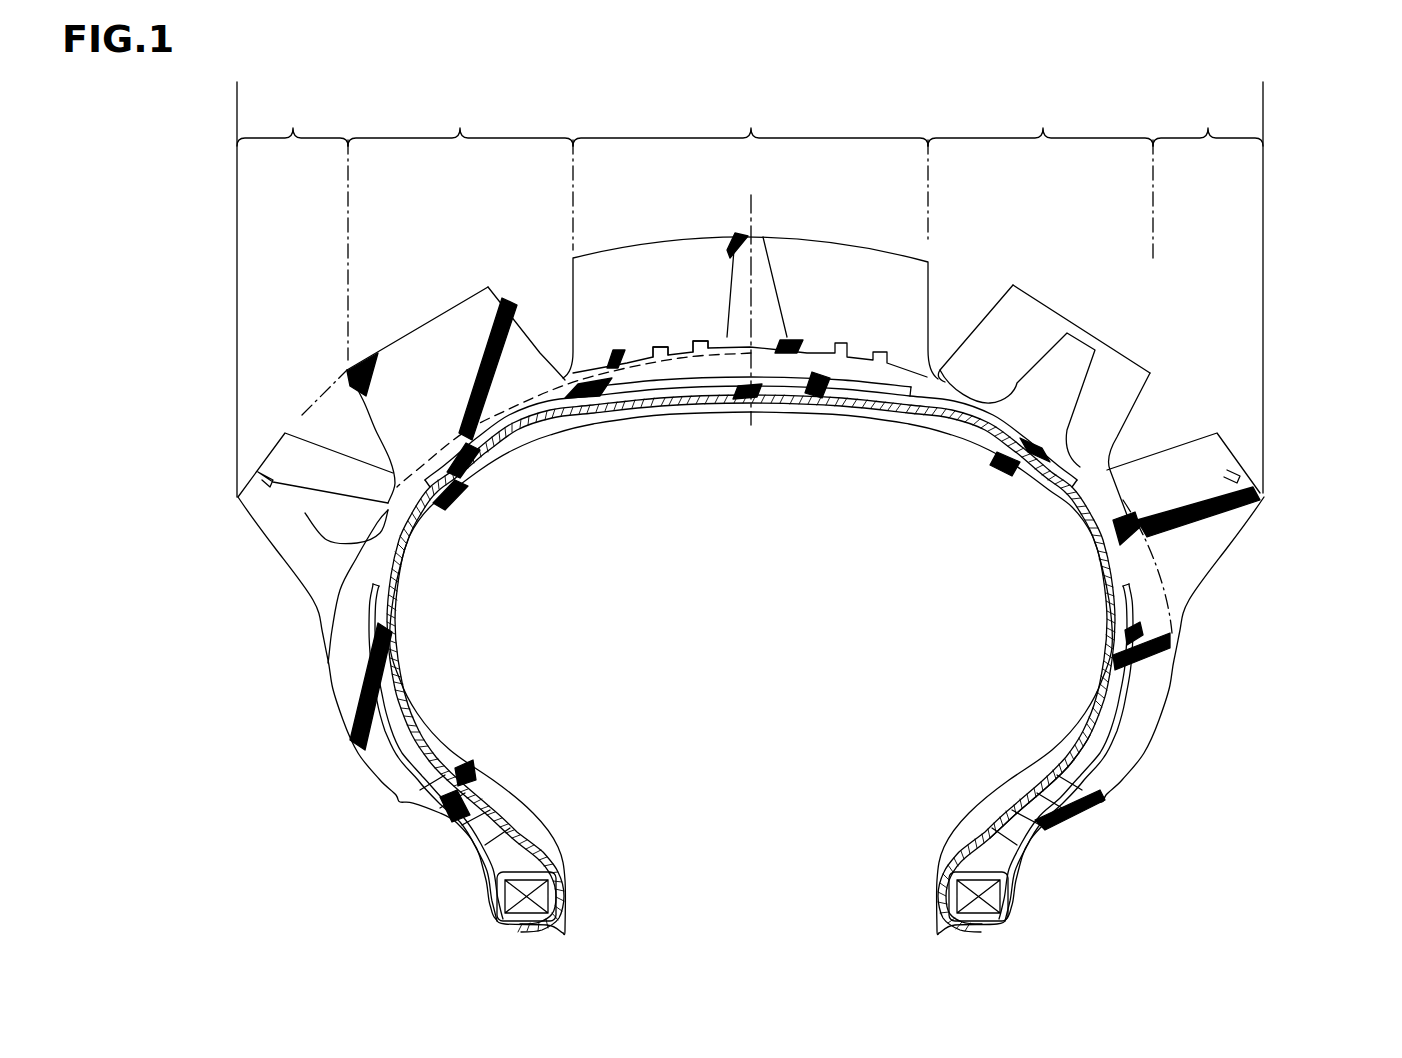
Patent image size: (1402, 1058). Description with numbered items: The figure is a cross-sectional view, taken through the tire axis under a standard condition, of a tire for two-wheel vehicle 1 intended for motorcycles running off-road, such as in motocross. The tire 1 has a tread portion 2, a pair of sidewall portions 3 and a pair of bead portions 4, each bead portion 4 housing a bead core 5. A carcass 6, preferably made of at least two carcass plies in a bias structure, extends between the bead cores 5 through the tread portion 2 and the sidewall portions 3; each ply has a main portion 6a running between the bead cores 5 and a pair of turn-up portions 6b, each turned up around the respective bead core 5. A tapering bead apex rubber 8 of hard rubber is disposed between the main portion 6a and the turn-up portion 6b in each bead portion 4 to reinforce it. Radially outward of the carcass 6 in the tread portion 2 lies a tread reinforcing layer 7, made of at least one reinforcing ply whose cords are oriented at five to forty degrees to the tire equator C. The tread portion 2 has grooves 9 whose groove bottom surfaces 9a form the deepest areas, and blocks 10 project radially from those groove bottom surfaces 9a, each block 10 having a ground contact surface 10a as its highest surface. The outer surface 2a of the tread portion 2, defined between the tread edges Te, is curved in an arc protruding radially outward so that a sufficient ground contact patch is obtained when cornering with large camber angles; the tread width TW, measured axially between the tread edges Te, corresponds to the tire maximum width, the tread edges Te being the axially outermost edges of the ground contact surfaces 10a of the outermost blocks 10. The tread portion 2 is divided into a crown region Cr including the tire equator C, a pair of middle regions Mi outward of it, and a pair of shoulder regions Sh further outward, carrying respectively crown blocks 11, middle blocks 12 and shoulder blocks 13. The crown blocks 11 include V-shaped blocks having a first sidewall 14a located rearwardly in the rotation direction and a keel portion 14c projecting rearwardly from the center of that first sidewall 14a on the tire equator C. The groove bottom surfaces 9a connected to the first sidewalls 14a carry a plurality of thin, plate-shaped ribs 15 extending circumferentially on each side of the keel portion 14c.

The tire for two-wheel vehicle 1 is at (228, 578).
The tread portion 2 is at (659, 218).
The outer surface of the tread portion 2a is at (348, 352).
The sidewall portion 3 is at (1206, 689).
The bead portion 4 is at (916, 886).
The bead core 5 is at (978, 897).
The carcass 6 is at (958, 643).
The main portion 6a is at (1118, 676).
The turn-up portion 6b is at (1117, 740).
The tread reinforcing layer 7 is at (820, 383).
The bead apex rubber 8 is at (990, 850).
The groove 9 is at (558, 333).
The groove bottom surface 9a is at (603, 355).
The block 10 is at (490, 555).
The ground contact surface 10a is at (412, 306).
The crown block 11 is at (690, 317).
The middle block 12 is at (1035, 300).
The shoulder block 13 is at (1195, 460).
The first sidewall 14a is at (905, 312).
The keel portion 14c is at (760, 290).
The rib 15 is at (840, 340).
The tread edge Te is at (1265, 495).
The tread width TW is at (237, 82).
The tire equator C is at (751, 288).
The shoulder region Sh is at (750, 227).
The middle region Mi is at (750, 172).
The crown region Cr is at (750, 120).